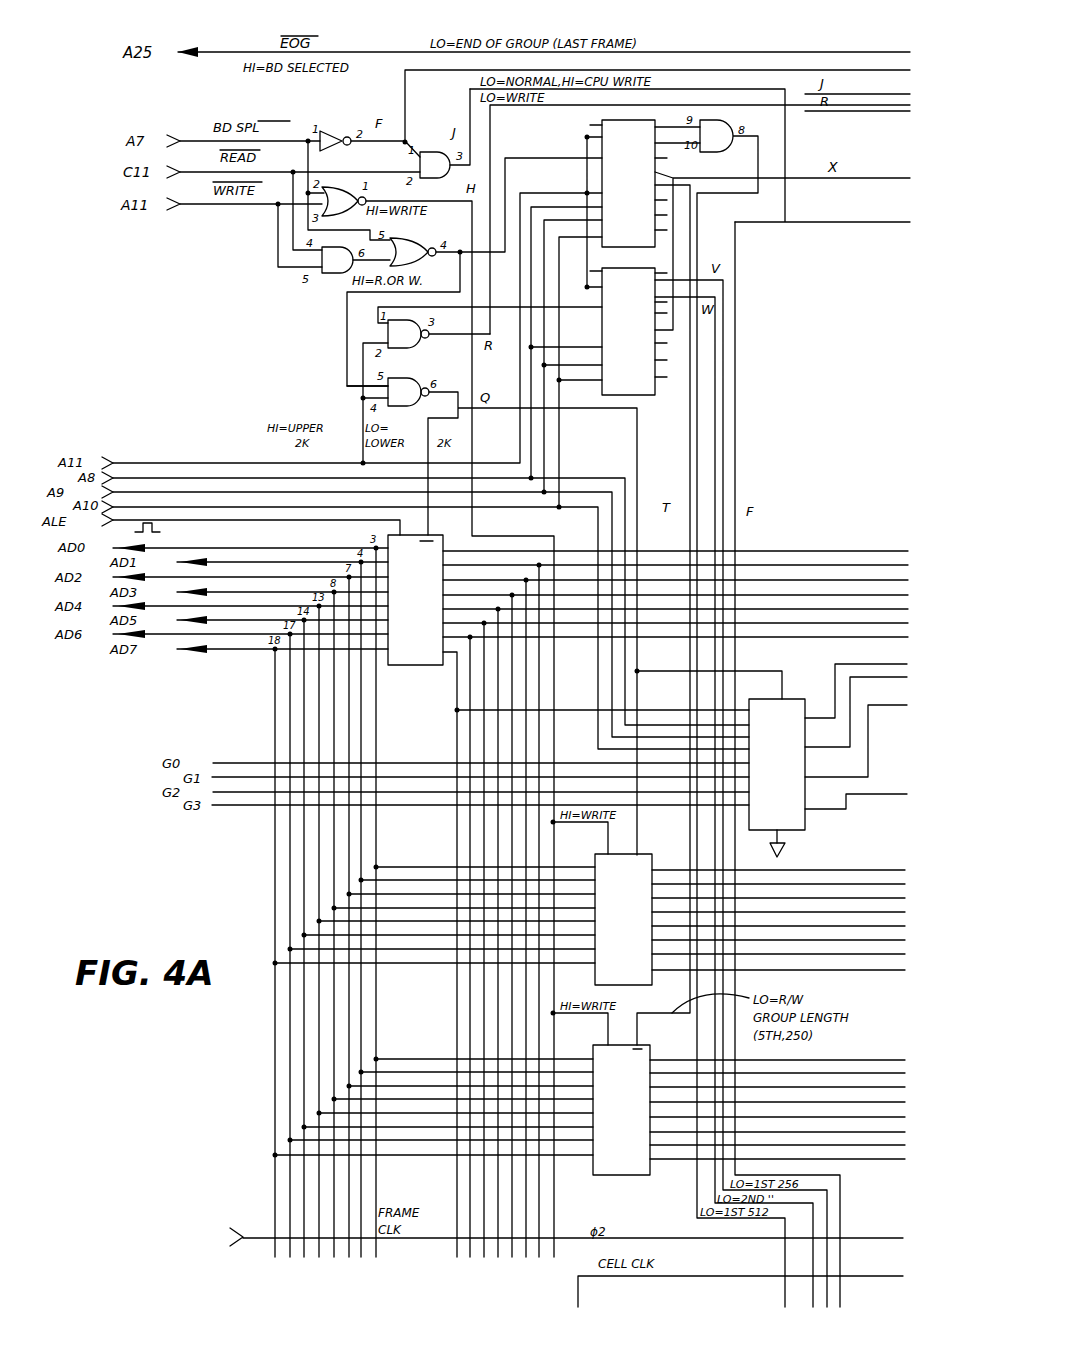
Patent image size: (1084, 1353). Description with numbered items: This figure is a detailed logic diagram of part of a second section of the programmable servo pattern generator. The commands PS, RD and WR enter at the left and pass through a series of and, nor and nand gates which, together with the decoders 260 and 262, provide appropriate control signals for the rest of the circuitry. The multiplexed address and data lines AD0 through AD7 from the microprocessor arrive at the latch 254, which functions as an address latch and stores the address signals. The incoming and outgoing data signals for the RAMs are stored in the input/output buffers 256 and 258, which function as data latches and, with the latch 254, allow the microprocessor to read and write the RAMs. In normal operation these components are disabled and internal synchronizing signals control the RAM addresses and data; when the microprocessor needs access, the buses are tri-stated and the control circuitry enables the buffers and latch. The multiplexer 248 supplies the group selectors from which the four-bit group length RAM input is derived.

The decoder 260 is at (597, 122).
The decoder 262 is at (638, 397).
The latch 254 is at (398, 667).
The multiplexer 248 is at (797, 832).
The input/output buffer 256 is at (596, 856).
The input/output buffer 258 is at (612, 1178).